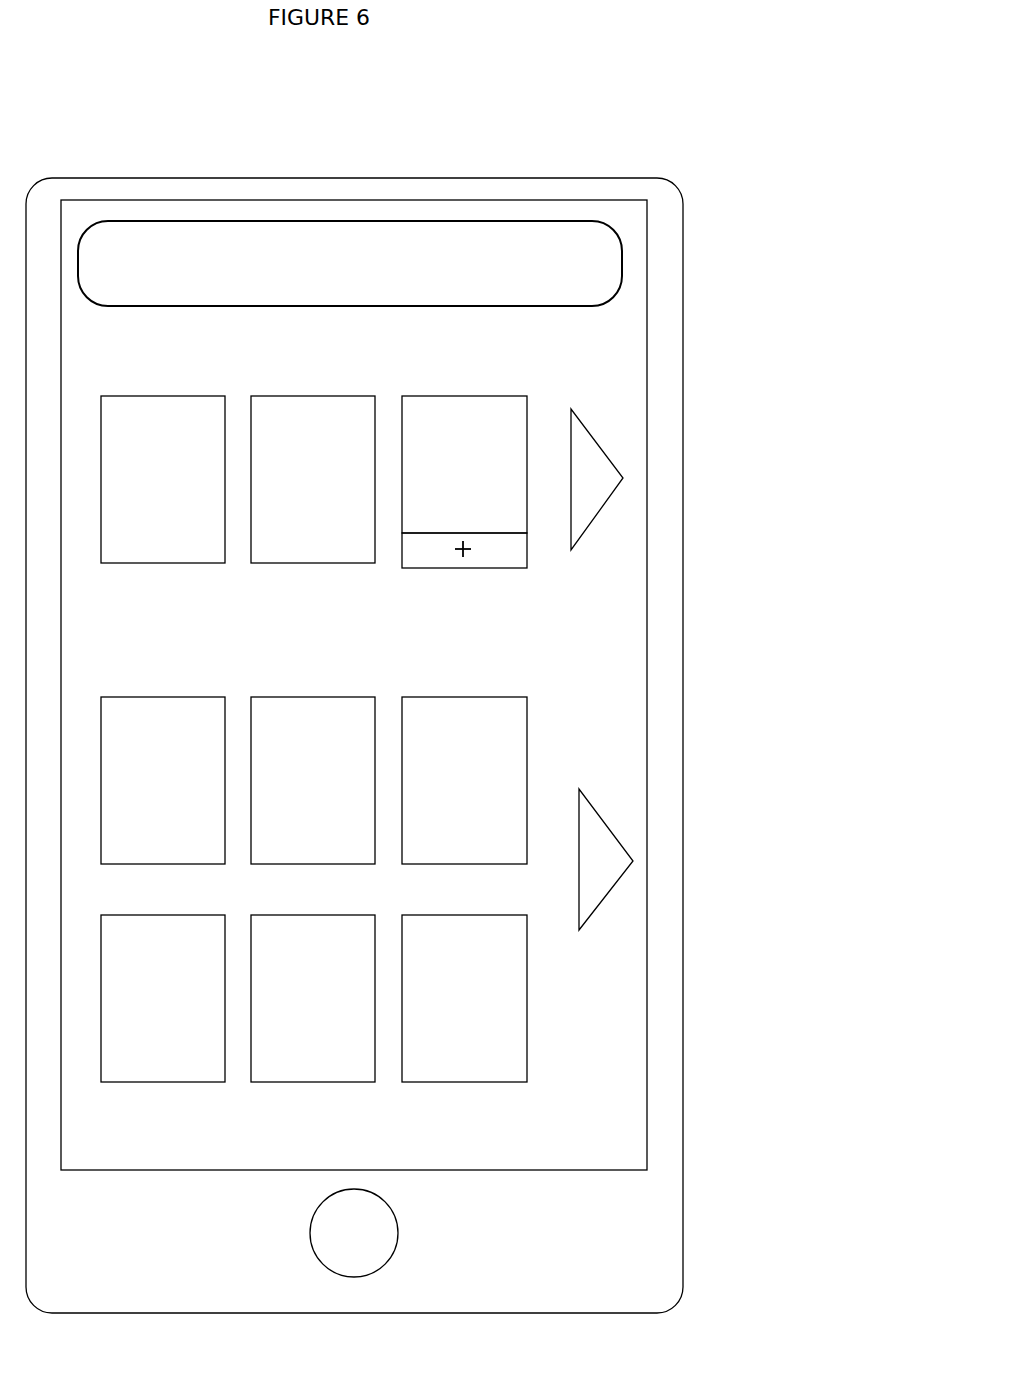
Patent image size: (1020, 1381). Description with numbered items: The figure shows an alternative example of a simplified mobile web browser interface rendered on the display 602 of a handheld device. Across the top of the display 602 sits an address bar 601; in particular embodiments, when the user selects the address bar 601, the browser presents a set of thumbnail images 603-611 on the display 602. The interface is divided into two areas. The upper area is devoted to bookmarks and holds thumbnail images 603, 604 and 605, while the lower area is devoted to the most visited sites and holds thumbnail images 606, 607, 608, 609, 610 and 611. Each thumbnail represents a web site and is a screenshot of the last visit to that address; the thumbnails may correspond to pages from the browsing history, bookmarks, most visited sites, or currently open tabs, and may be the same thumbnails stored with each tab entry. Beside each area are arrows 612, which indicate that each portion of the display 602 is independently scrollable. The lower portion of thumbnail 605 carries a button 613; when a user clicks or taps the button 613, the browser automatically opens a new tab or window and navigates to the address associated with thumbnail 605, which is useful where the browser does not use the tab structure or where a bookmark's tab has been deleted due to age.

The address bar 601 is at (349, 222).
The display 602 is at (618, 381).
The thumbnail image 603 is at (163, 479).
The thumbnail image 604 is at (313, 479).
The thumbnail image 605 is at (464, 464).
The thumbnail image 606 is at (163, 780).
The thumbnail image 607 is at (313, 780).
The thumbnail image 608 is at (464, 780).
The thumbnail image 609 is at (163, 998).
The thumbnail image 610 is at (313, 998).
The thumbnail image 611 is at (464, 998).
The arrows 612 is at (579, 932).
The button 613 is at (527, 548).